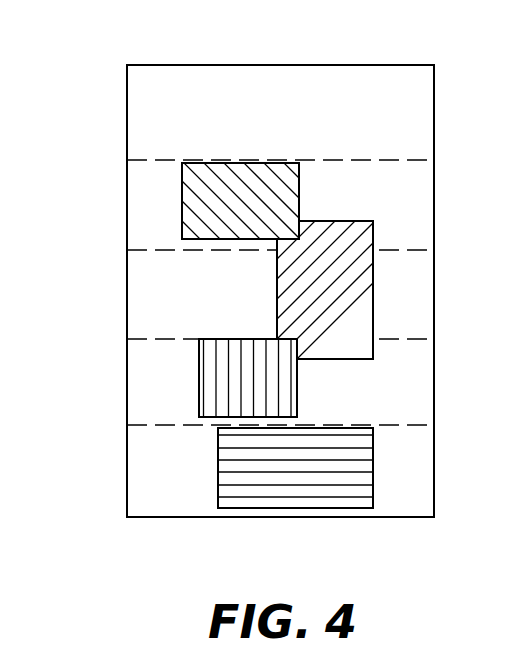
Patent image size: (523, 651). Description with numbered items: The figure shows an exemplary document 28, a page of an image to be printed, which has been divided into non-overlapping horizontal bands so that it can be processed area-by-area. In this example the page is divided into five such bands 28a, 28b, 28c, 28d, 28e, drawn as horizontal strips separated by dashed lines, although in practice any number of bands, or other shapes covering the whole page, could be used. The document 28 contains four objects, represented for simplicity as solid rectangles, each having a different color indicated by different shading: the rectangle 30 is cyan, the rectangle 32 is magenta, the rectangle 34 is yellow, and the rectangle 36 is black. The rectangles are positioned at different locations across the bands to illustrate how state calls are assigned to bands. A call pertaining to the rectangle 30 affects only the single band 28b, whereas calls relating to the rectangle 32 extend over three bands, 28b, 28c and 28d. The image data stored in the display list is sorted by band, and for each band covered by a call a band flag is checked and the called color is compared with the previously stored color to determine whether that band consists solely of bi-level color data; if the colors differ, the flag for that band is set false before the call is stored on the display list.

The document 28 is at (320, 88).
The horizontal band 28a is at (143, 128).
The horizontal band 28b is at (143, 202).
The horizontal band 28c is at (143, 299).
The horizontal band 28d is at (143, 387).
The horizontal band 28e is at (143, 480).
The rectangle 30 is at (257, 180).
The rectangle 32 is at (347, 240).
The rectangle 34 is at (247, 357).
The rectangle 36 is at (333, 455).